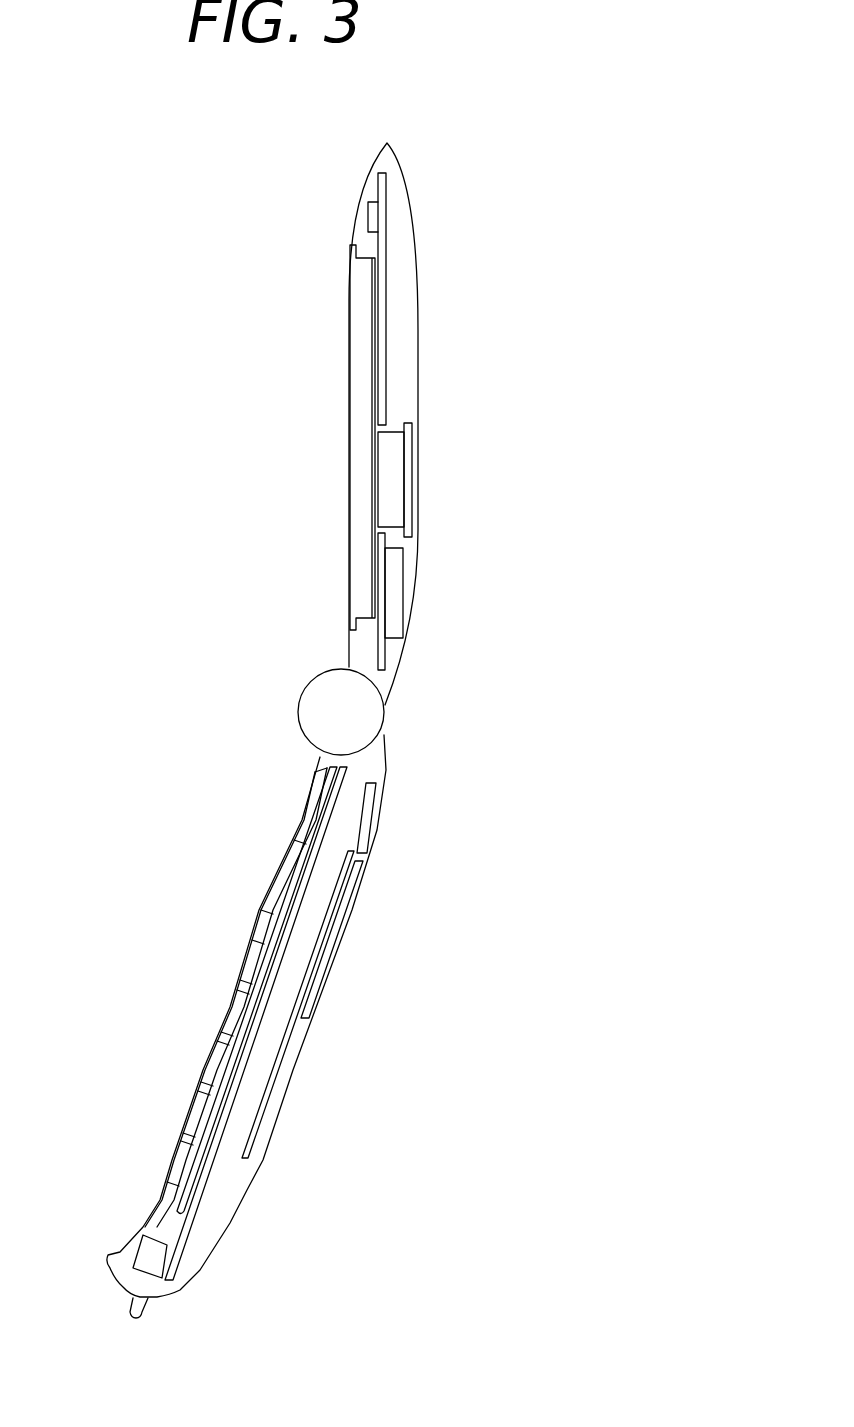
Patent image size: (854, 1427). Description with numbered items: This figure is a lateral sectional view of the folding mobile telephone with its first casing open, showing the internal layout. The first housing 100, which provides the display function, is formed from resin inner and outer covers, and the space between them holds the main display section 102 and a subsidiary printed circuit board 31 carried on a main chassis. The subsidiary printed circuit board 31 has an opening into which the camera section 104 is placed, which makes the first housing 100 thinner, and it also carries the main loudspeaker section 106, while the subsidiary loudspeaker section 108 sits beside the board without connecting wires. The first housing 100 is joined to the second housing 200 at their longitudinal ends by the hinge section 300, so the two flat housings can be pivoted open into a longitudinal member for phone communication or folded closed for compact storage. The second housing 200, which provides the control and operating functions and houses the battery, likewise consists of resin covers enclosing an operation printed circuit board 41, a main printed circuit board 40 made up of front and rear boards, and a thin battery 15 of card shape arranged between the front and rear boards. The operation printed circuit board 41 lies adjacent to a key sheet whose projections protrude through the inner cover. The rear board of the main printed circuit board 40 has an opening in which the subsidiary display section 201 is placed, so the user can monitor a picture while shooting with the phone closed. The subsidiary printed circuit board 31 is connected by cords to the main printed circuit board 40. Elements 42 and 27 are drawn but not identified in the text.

The first housing 100 is at (430, 365).
The subsidiary printed circuit board 31 is at (383, 283).
The main loudspeaker section 106 is at (373, 217).
The main display section 102 is at (358, 415).
The camera section 104 is at (400, 478).
The subsidiary loudspeaker section 108 is at (400, 590).
The hinge section 300 is at (356, 718).
The second housing 200 is at (385, 848).
The keyboard 42 is at (248, 1000).
The operation printed circuit board 41 is at (305, 840).
The main printed circuit board 40 is at (187, 1233).
The battery 15 is at (265, 1047).
The subsidiary display section 201 is at (333, 935).
The component at tip 27 is at (147, 1250).